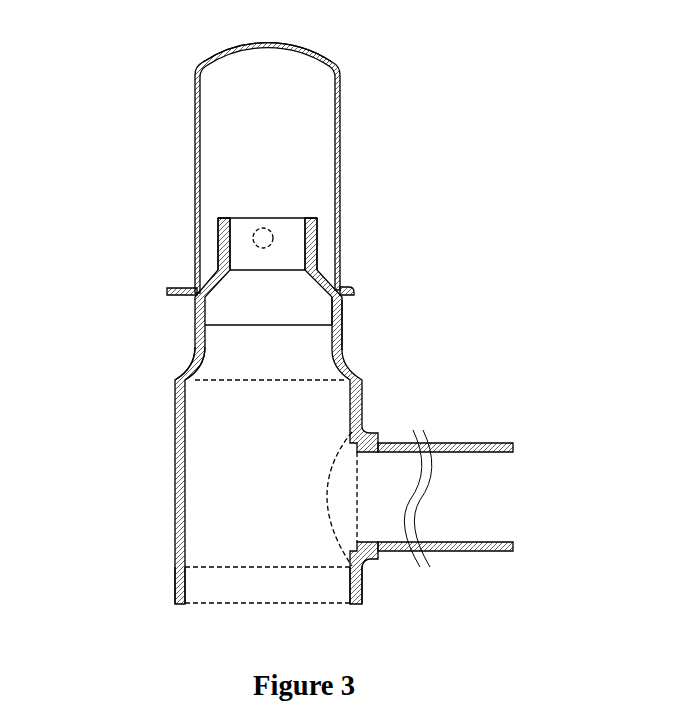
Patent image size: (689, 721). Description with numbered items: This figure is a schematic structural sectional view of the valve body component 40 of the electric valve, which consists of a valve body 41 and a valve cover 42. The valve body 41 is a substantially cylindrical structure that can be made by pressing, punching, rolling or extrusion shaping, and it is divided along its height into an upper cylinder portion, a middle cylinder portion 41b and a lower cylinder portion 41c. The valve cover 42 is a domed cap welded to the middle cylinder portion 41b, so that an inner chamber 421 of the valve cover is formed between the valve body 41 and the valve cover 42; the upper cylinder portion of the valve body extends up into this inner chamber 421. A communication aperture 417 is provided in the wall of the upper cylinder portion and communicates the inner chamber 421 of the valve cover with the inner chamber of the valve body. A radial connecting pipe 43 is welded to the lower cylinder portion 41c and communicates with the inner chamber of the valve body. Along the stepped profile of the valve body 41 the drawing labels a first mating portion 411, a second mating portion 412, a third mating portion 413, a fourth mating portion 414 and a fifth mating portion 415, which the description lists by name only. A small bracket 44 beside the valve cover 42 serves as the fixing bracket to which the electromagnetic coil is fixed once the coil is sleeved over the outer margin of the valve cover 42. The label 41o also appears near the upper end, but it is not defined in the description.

The valve body component 40 is at (123, 80).
The valve body 41 is at (178, 450).
The first mating portion 411 is at (228, 235).
The second mating portion 412 is at (197, 288).
The third mating portion 413 is at (196, 349).
The fourth mating portion 414 is at (180, 583).
The fifth mating portion 415 is at (340, 320).
The communication aperture 417 is at (272, 235).
The middle cylinder portion 41b is at (336, 313).
The lower cylinder portion 41c is at (362, 572).
The inner chamber opening 41o is at (308, 240).
The valve cover 42 is at (340, 138).
The inner chamber of the valve cover 421 is at (313, 72).
The radial connecting pipe 43 is at (458, 445).
The bracket 44 is at (353, 287).